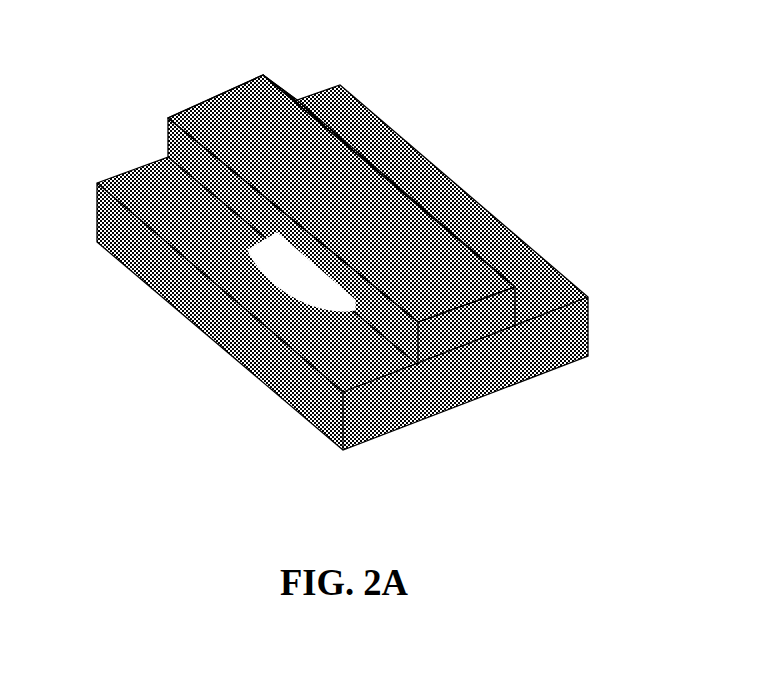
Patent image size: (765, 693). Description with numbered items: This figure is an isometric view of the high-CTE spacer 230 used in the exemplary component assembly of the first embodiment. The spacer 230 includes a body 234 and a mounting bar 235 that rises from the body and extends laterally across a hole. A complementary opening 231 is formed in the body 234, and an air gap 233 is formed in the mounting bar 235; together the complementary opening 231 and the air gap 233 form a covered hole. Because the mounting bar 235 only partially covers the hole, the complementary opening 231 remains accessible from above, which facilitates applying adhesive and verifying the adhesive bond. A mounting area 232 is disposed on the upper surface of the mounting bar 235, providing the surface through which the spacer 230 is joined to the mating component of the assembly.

The spacer 230 is at (503, 92).
The complementary opening 231 is at (265, 263).
The mounting area 232 is at (343, 200).
The air gap 233 is at (233, 200).
The body 234 is at (133, 170).
The mounting bar 235 is at (221, 94).